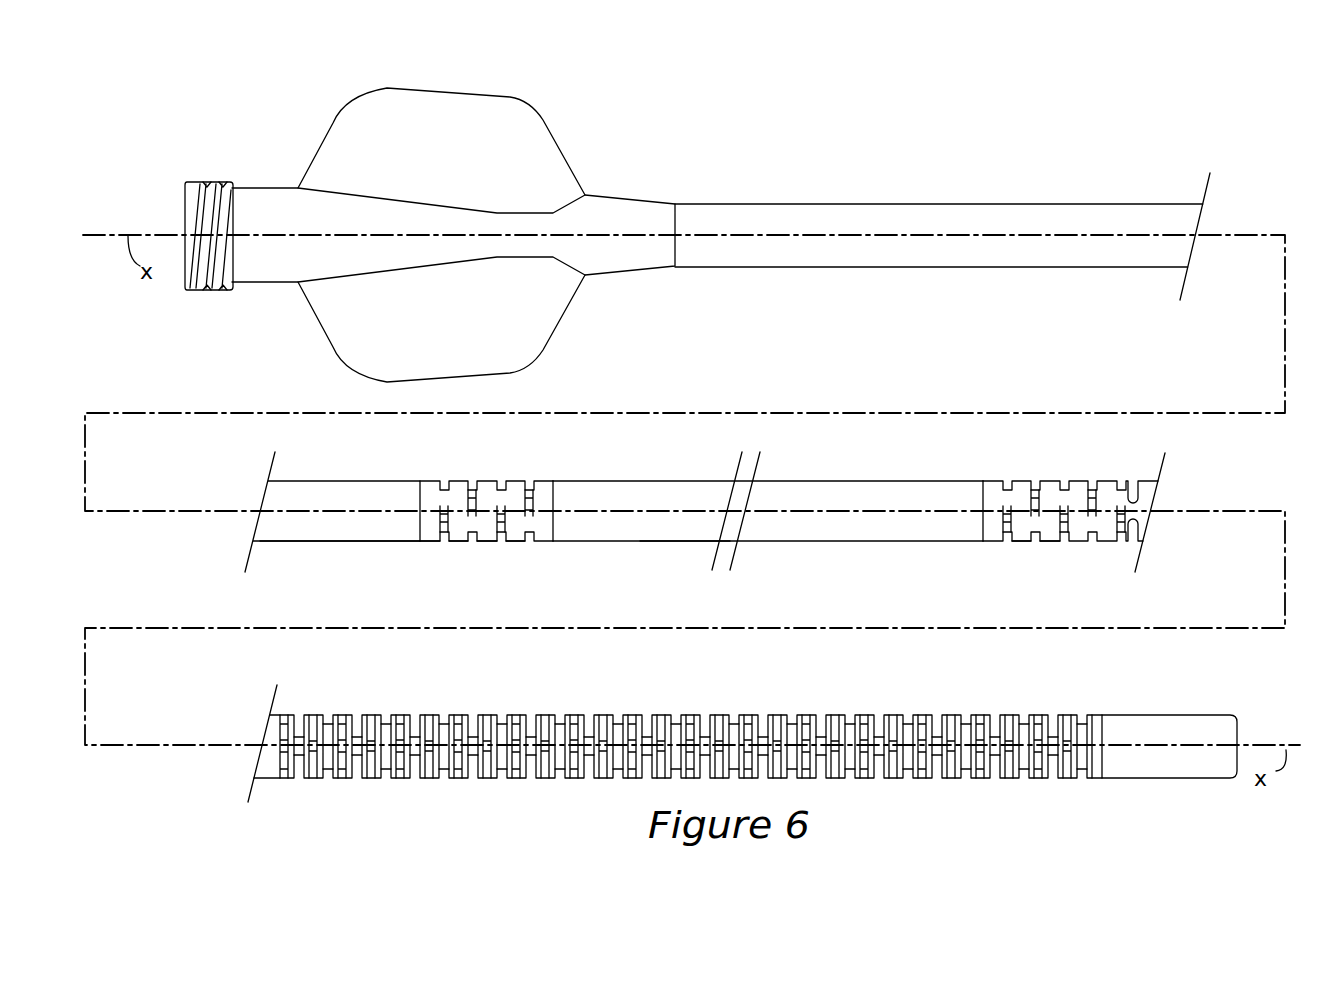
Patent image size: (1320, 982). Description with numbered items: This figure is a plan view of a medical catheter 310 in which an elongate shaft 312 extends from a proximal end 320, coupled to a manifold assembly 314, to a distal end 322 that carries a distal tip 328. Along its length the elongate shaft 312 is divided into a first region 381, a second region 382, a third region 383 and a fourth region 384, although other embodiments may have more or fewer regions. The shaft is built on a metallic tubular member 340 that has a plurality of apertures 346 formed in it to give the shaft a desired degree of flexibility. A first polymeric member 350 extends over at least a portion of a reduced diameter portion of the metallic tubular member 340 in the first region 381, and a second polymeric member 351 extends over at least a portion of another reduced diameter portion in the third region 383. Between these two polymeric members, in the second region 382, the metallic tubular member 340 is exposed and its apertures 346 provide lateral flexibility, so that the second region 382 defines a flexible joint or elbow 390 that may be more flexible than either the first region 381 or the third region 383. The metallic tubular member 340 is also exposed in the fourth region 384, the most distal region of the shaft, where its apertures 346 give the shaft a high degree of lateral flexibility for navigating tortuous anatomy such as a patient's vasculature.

The medical catheter 310 is at (1033, 112).
The elongate shaft 312 is at (1123, 188).
The manifold assembly 314 is at (574, 110).
The proximal end 320 is at (658, 186).
The distal end 322 is at (1229, 787).
The distal tip 328 is at (1229, 710).
The metallic tubular member 340 is at (427, 480).
The apertures 346 is at (502, 480).
The first polymeric member 350 is at (343, 480).
The second polymeric member 351 is at (820, 481).
The first region 381 is at (302, 562).
The second region 382 is at (478, 562).
The third region 383 is at (690, 562).
The fourth region 384 is at (1068, 562).
The flexible joint or elbow 390 is at (505, 562).